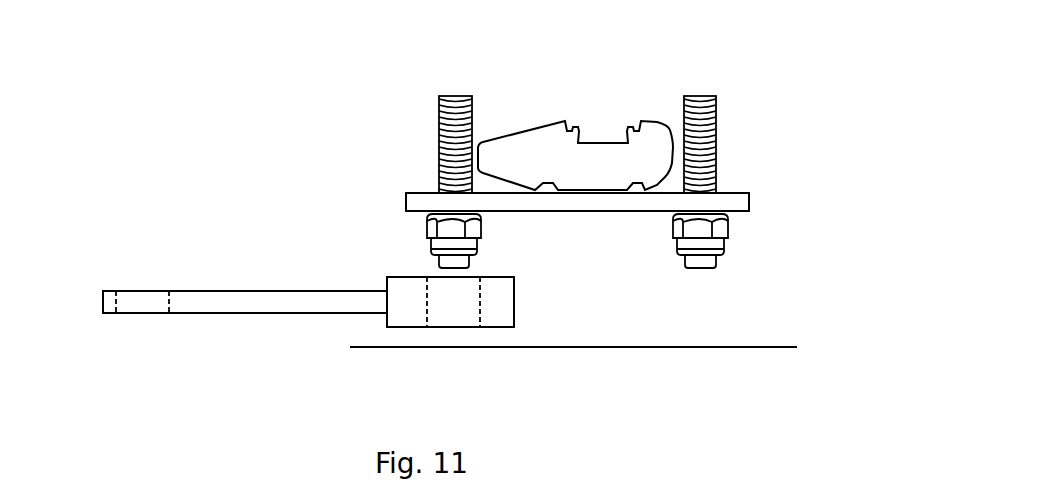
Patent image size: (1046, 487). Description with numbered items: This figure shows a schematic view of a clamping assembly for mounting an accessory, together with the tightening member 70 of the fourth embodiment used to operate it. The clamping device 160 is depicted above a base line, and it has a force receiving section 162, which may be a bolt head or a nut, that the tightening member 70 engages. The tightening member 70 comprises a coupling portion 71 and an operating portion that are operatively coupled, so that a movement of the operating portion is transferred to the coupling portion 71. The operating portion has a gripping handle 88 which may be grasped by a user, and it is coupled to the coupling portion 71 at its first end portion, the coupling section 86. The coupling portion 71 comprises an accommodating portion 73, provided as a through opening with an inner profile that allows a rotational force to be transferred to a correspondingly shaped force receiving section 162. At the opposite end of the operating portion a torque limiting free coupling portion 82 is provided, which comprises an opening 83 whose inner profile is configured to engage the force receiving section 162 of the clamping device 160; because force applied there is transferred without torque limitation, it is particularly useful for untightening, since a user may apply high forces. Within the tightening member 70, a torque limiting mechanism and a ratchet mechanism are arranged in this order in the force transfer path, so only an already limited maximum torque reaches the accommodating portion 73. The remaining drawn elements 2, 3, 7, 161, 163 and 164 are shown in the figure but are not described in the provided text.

The mounting arrangement 2 is at (183, 76).
The mounting rail 3 is at (531, 121).
The roof surface 7 is at (751, 342).
The tightening member 70 is at (277, 259).
The coupling portion 71 is at (526, 314).
The accommodating portion 73 is at (458, 336).
The torque limiting free coupling portion 82 is at (104, 321).
The opening 83 is at (136, 284).
The coupling section 86 is at (364, 279).
The gripping handle 88 is at (276, 316).
The clamping device 160 is at (344, 142).
The first nut 161 is at (419, 227).
The force receiving section 162 is at (731, 232).
The mounting plate 163 is at (741, 189).
The threaded rod 164 is at (434, 124).